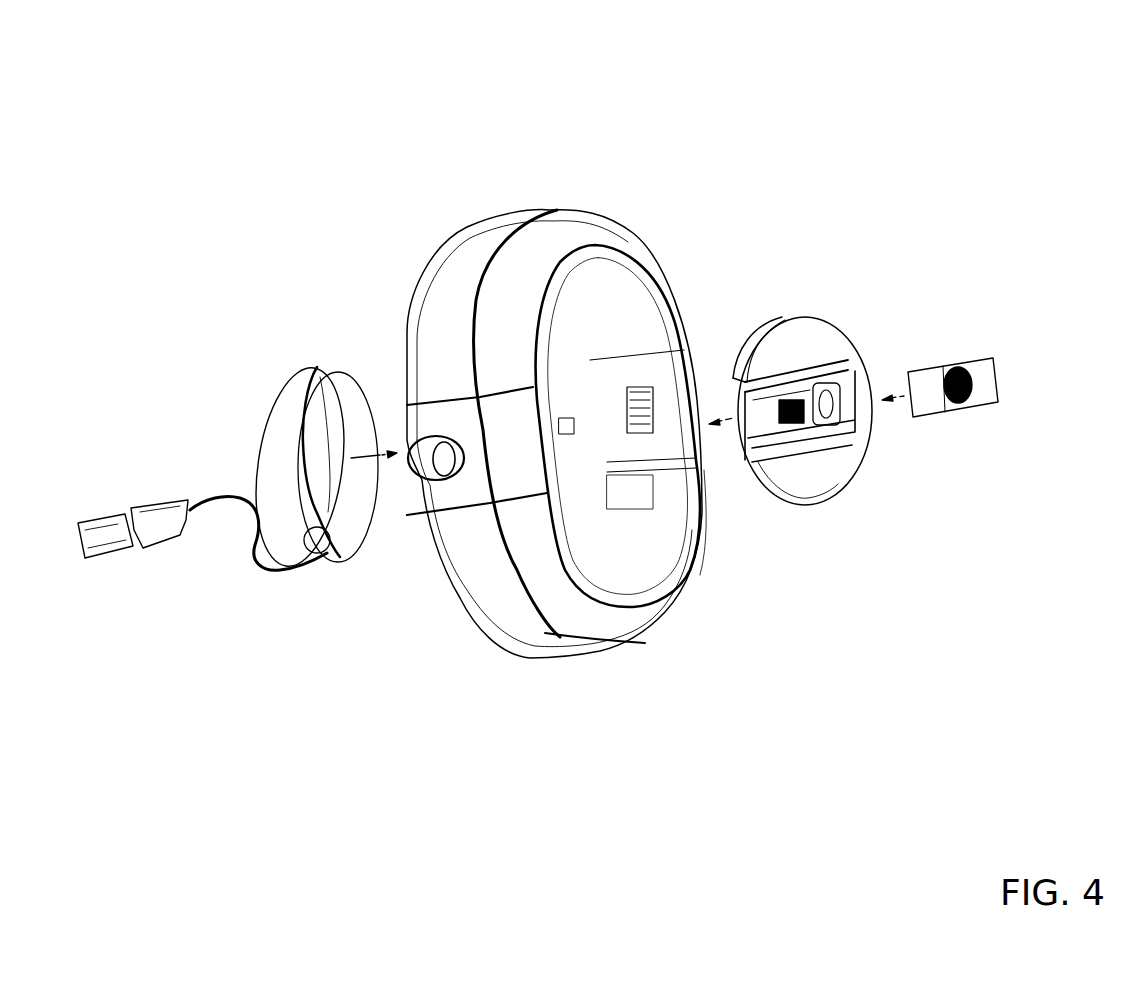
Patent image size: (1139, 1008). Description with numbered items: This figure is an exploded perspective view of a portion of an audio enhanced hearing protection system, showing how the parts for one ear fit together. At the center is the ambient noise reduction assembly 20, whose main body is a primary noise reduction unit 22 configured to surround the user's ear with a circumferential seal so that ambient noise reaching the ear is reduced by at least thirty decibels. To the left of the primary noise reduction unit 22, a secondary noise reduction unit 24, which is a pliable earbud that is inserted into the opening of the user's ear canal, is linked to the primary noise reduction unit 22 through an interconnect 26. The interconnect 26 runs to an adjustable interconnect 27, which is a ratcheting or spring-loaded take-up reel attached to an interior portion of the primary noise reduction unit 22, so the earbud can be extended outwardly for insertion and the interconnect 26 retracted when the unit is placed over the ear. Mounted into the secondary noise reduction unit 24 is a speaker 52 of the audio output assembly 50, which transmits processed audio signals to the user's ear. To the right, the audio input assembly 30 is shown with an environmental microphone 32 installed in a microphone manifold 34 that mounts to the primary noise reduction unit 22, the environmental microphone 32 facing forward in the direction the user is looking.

The ambient noise reduction assembly 20 is at (530, 675).
The primary noise reduction unit 22 is at (603, 210).
The secondary noise reduction unit 24 is at (168, 506).
The interconnect 26 is at (273, 567).
The adjustable interconnect 27 is at (360, 550).
The audio input assembly 30 is at (842, 515).
The environmental microphone 32 is at (973, 405).
The microphone manifold 34 is at (827, 320).
The audio output assembly 50 is at (128, 640).
The speaker 52 is at (105, 523).